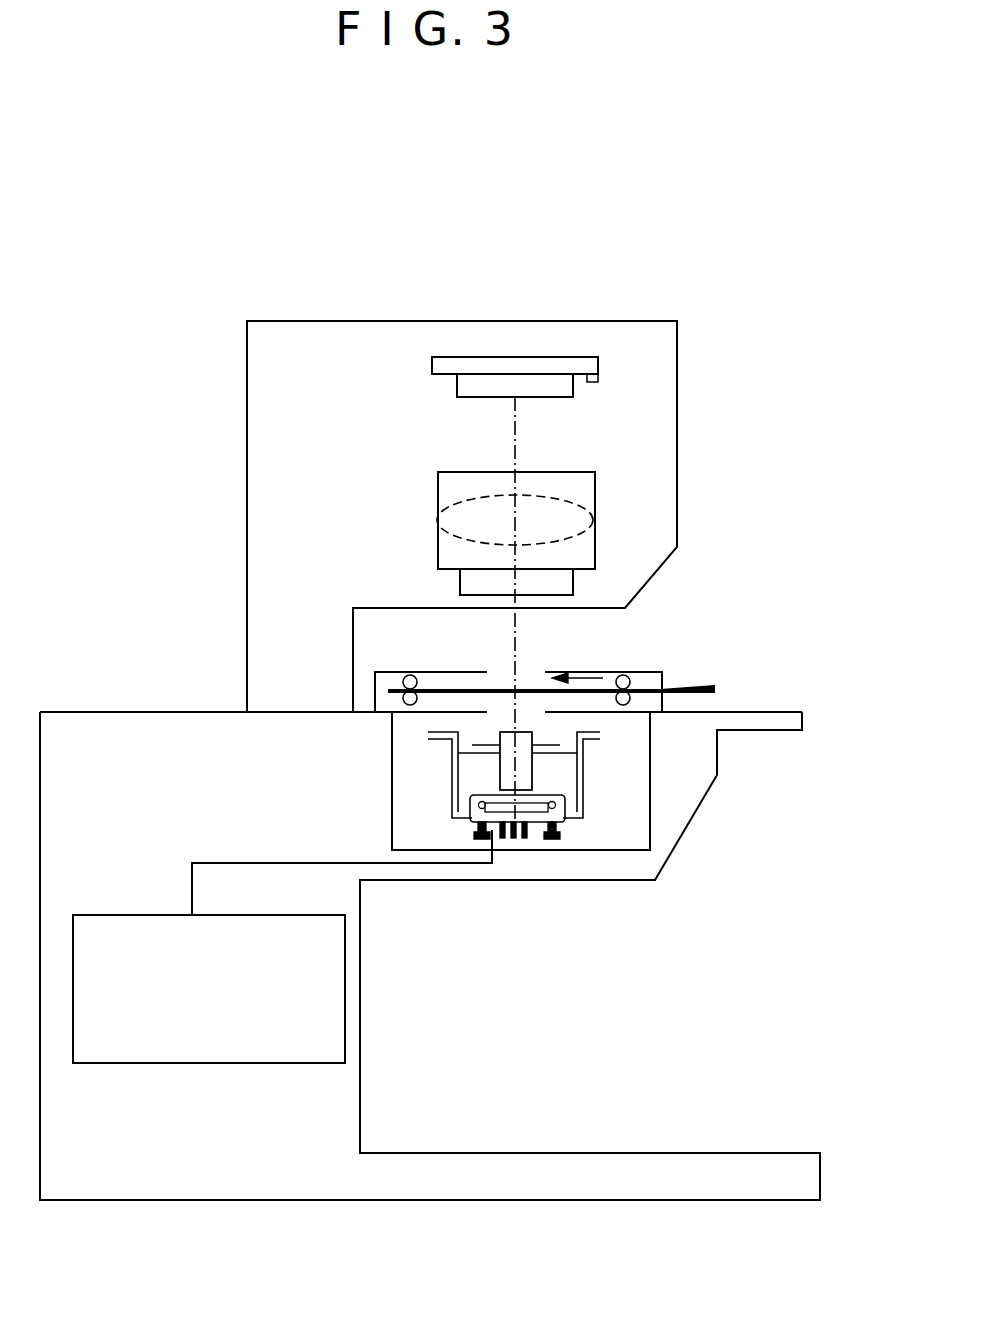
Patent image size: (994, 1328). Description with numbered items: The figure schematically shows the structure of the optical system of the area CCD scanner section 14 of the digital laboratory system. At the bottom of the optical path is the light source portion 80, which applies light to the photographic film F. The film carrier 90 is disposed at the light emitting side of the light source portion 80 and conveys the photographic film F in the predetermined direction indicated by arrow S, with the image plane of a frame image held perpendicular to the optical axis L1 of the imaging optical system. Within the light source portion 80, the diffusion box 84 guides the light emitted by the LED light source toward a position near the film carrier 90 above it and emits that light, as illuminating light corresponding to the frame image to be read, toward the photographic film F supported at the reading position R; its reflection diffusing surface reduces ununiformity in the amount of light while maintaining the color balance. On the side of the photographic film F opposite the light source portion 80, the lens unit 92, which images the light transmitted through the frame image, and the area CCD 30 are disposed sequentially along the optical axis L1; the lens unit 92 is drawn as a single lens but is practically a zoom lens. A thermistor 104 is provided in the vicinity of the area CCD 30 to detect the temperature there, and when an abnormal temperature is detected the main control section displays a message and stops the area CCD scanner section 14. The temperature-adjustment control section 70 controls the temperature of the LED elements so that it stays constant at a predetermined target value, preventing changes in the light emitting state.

The area CCD scanner section 14 is at (688, 248).
The area CCD 30 is at (457, 386).
The thermistor 104 is at (590, 384).
The optical axis L1 is at (519, 434).
The lens unit 92 is at (438, 505).
The film carrier 90 is at (655, 665).
The photographic film F is at (453, 690).
The reading position R is at (498, 666).
The conveying direction S is at (596, 672).
The light source portion 80 is at (586, 826).
The diffusion box 84 is at (500, 768).
The temperature-adjustment control section 70 is at (345, 960).